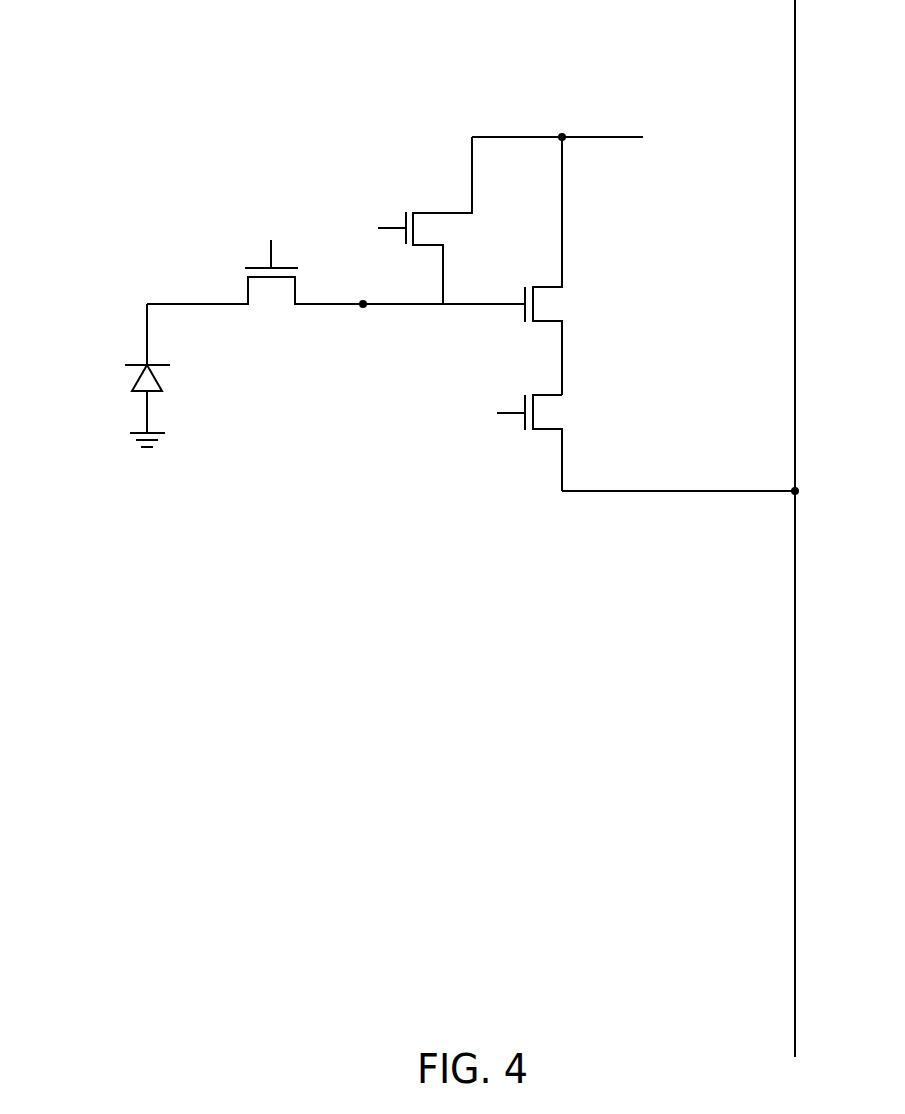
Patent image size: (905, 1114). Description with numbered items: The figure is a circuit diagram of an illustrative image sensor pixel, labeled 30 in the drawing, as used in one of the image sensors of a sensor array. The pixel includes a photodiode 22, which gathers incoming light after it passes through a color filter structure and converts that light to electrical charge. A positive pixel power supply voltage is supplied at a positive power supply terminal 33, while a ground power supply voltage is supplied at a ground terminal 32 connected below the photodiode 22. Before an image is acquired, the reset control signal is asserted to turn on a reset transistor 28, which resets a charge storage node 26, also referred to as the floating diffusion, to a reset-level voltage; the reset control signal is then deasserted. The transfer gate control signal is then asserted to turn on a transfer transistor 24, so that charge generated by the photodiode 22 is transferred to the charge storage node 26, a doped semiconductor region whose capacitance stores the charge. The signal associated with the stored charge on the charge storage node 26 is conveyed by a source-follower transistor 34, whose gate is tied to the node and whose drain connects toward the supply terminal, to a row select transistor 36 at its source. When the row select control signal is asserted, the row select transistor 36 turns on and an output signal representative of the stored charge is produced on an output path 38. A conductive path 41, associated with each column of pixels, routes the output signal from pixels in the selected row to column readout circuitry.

The pixel cell 30 is at (216, 93).
The photodiode 22 is at (118, 381).
The ground terminal 32 is at (172, 446).
The transfer transistor 24 is at (280, 312).
The charge storage node 26 is at (365, 301).
The reset transistor 28 is at (442, 192).
The positive power supply terminal 33 is at (640, 134).
The source-follower transistor 34 is at (575, 301).
The row select transistor 36 is at (575, 410).
The output path 38 is at (677, 496).
The path 41 is at (796, 710).